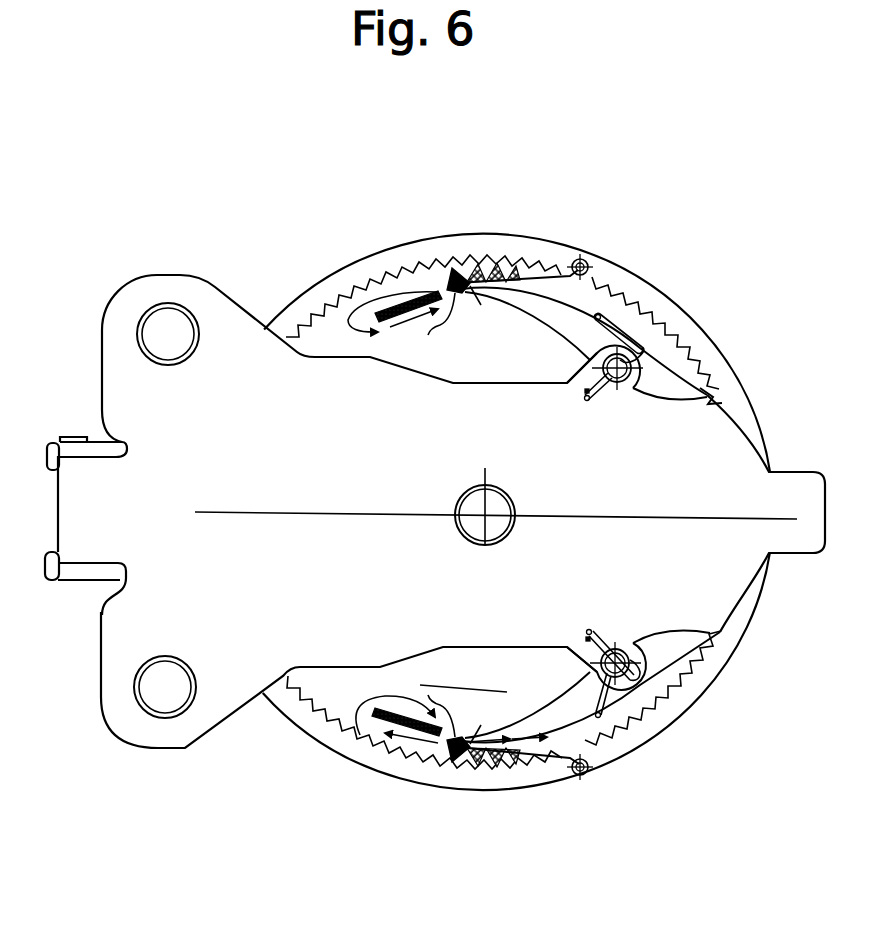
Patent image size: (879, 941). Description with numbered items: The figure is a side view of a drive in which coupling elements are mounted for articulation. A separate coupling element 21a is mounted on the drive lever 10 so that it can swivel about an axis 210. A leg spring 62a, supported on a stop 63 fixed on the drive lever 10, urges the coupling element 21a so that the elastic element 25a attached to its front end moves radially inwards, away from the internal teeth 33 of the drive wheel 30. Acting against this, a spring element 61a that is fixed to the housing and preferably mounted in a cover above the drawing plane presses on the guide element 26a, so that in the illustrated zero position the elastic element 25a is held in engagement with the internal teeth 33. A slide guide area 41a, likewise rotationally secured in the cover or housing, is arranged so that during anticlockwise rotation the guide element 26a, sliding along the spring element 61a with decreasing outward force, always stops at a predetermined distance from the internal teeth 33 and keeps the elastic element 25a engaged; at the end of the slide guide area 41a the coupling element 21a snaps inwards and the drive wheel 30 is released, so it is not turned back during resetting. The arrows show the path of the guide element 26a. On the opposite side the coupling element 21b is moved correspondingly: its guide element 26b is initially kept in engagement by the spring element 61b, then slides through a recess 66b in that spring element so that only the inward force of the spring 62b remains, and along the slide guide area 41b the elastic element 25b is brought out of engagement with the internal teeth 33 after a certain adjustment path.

The drive lever 10 is at (635, 587).
The drive wheel 30 is at (277, 318).
The internal teeth 33 is at (342, 292).
The slide guide area 41a is at (407, 303).
The slide guide area 41b is at (393, 723).
The guide element 26a is at (447, 270).
The guide element 26b is at (453, 755).
The elastic element 25a is at (497, 258).
The elastic element 25b is at (487, 768).
The spring element 61a is at (546, 268).
The spring element 61b is at (548, 760).
The coupling element 21a is at (586, 259).
The coupling element 21b is at (586, 776).
The leg spring 62a is at (584, 316).
The spring 62b is at (605, 716).
The axis 210 is at (650, 362).
The stop 63 is at (712, 397).
The recess 66b is at (443, 763).